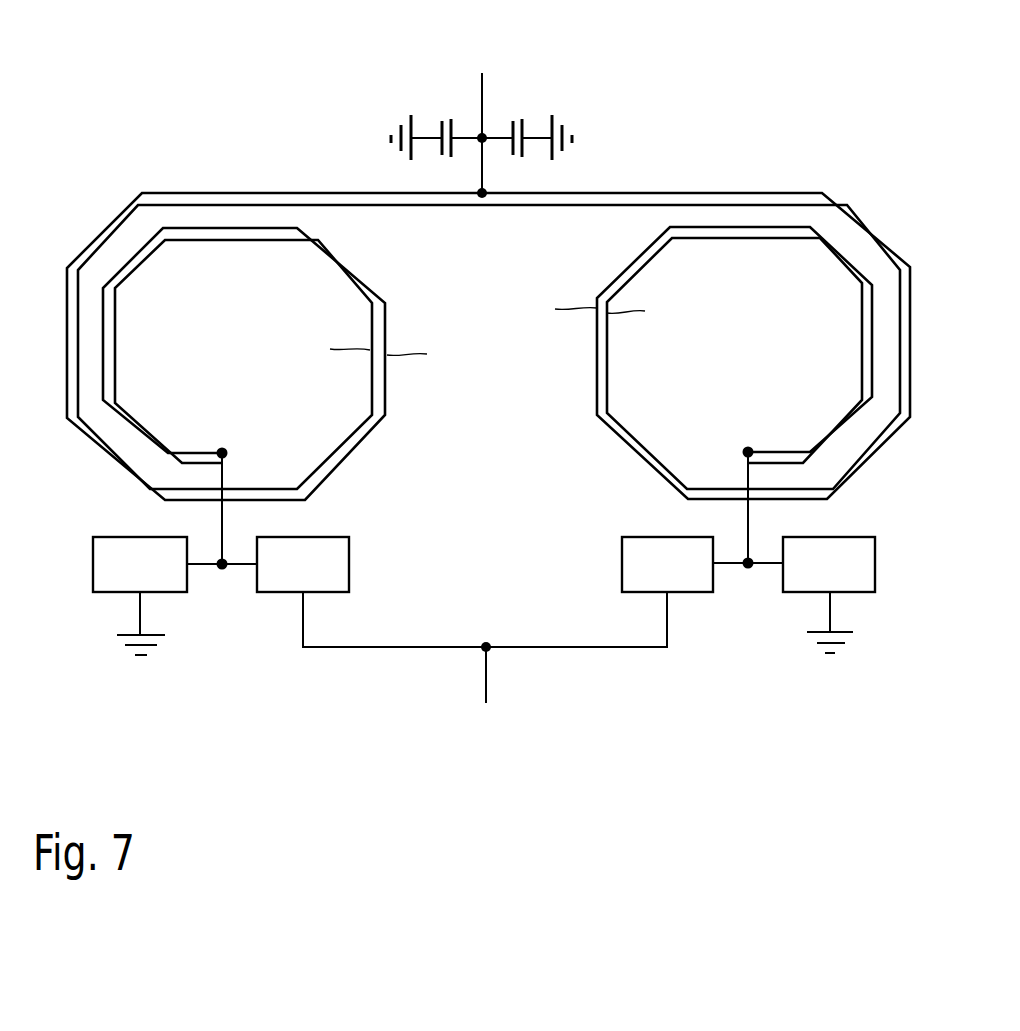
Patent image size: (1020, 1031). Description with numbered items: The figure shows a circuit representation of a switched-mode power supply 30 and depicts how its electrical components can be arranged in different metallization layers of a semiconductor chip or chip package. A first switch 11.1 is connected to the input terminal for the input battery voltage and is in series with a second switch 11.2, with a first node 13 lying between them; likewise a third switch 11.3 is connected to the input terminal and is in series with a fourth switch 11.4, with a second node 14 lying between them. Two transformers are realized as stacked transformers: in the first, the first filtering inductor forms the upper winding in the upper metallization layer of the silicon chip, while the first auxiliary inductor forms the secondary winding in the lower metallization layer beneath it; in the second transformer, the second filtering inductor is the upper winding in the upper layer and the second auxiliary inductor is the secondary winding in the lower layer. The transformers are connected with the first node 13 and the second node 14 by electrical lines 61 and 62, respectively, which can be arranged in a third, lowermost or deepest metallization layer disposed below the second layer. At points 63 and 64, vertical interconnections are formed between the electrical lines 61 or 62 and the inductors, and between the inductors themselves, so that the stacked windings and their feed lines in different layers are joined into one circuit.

The switched-mode power supply 30 is at (806, 68).
The electrical line 61 is at (223, 527).
The electrical line 62 is at (747, 525).
The point 63 is at (225, 452).
The point 64 is at (745, 452).
The first node 13 is at (220, 569).
The second node 14 is at (748, 568).
The first switch 11.1 is at (278, 593).
The second switch 11.2 is at (108, 593).
The third switch 11.3 is at (690, 593).
The fourth switch 11.4 is at (863, 593).